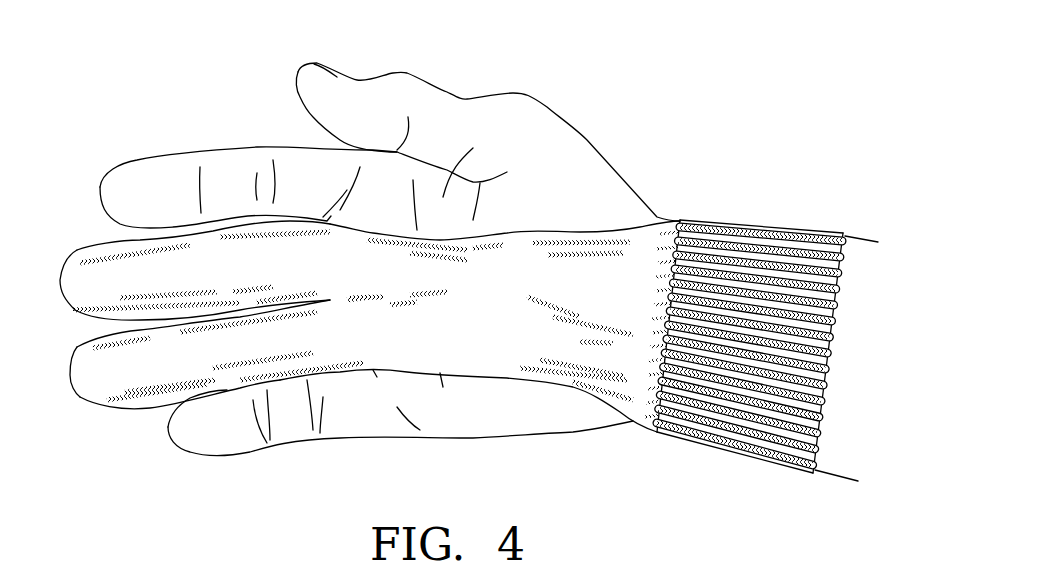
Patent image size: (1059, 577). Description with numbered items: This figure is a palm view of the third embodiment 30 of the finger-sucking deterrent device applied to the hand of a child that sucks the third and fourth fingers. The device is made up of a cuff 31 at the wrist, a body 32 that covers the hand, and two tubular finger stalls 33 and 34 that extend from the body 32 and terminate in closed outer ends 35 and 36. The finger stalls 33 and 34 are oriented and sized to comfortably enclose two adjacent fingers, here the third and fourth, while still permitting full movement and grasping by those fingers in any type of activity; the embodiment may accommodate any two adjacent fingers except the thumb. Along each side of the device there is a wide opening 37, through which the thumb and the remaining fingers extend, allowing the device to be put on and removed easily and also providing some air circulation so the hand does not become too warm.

The third embodiment 30 is at (692, 148).
The cuff 31 is at (763, 250).
The body 32 is at (588, 352).
The tubular finger stall 33 is at (155, 268).
The tubular finger stall 34 is at (148, 362).
The closed outer end 35 is at (62, 285).
The closed outer end 36 is at (75, 385).
The wide opening 37 is at (585, 233).